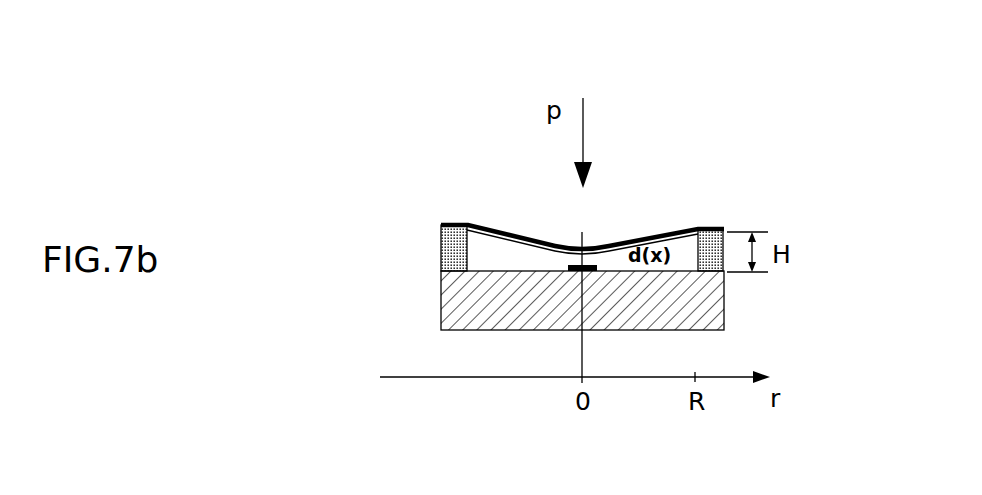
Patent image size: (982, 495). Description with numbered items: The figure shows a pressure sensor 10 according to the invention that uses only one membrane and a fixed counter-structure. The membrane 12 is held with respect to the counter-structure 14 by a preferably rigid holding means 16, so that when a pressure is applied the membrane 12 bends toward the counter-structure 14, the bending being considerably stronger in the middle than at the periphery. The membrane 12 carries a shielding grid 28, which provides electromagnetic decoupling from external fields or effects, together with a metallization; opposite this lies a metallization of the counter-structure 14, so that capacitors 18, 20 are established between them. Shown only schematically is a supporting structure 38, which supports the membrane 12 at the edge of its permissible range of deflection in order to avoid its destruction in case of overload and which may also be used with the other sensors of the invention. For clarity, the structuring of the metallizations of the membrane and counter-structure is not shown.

The pressure sensor 10 is at (735, 158).
The membrane 12 is at (661, 229).
The counter-structure 14 is at (441, 316).
The holding means 16 is at (441, 262).
The capacitor 18 is at (567, 265).
The capacitor 20 is at (545, 241).
The shielding grid 28 is at (441, 222).
The supporting structure 38 is at (577, 250).